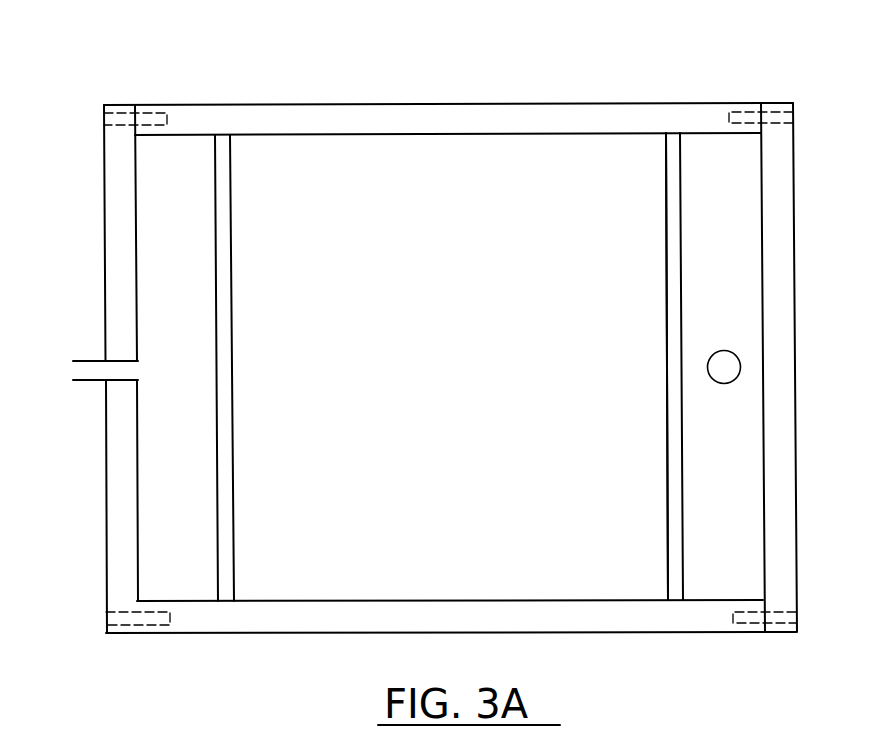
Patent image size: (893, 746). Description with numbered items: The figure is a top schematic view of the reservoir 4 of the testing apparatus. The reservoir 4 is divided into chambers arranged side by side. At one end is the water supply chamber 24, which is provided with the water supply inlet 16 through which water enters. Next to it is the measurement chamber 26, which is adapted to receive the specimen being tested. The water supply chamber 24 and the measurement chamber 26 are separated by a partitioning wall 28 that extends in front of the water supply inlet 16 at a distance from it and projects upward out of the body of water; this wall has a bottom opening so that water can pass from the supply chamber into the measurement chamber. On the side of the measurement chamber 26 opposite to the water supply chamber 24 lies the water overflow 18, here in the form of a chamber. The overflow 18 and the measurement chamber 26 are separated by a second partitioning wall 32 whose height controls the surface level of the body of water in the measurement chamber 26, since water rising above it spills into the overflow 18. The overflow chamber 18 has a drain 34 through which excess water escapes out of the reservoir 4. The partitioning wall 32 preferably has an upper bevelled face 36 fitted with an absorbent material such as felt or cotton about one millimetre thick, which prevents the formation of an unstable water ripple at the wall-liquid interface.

The reservoir 4 is at (172, 662).
The water supply inlet 16 is at (124, 368).
The water overflow 18 is at (710, 143).
The water supply chamber 24 is at (180, 155).
The measurement chamber 26 is at (412, 155).
The partitioning wall 28 is at (233, 442).
The partitioning wall 32 is at (667, 450).
The drain 34 is at (733, 383).
The upper bevelled face 36 is at (673, 205).